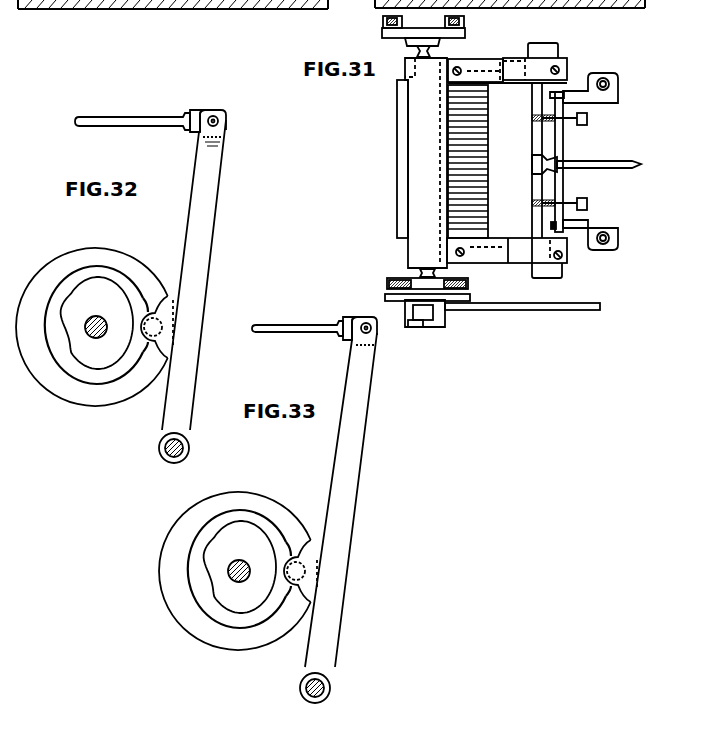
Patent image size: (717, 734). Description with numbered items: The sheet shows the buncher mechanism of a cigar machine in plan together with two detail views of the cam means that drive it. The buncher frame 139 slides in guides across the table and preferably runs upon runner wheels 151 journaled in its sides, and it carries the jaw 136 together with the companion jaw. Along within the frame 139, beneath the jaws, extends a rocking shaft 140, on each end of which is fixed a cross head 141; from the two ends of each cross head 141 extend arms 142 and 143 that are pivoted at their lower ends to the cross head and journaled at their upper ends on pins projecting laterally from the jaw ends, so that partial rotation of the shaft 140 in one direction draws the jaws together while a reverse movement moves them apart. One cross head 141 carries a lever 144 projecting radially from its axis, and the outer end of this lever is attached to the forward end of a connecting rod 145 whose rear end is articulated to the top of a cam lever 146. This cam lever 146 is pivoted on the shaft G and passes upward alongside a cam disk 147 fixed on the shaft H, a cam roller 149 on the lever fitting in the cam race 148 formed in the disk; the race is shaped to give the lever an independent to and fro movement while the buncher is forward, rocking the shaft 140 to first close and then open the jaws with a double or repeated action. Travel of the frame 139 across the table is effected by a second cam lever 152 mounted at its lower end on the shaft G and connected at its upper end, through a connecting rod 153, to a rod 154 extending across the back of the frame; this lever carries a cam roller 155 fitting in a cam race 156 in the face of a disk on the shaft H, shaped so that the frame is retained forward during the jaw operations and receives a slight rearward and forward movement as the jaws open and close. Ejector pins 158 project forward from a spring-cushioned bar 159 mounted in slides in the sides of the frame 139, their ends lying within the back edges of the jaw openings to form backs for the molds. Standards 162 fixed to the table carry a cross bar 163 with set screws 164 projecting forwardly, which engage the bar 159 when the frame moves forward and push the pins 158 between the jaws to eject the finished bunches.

In FIG. 31, the jaw 136 is at (397, 150).
In FIG. 31, the frame 139 is at (543, 63).
In FIG. 31, the rocking shaft 140 is at (417, 53).
In FIG. 31, the cross head 141 is at (441, 42).
In FIG. 31, the arm 142 is at (467, 32).
In FIG. 31, the arm 143 is at (385, 22).
In FIG. 31, the lever 144 is at (421, 313).
In FIG. 31, the connecting rod 145 is at (591, 311).
In FIG. 33, the connecting rod 145 is at (299, 325).
In FIG. 33, the cam lever 146 is at (353, 442).
In FIG. 33, the cam disk 147 is at (253, 497).
In FIG. 33, the cam race 148 is at (212, 623).
In FIG. 33, the cam roller 149 is at (300, 570).
In FIG. 31, the runner wheels 151 is at (480, 3).
In FIG. 32, the cam lever 152 is at (200, 263).
In FIG. 31, the connecting rod 153 is at (609, 167).
In FIG. 32, the connecting rod 153 is at (132, 117).
In FIG. 31, the rod 154 is at (537, 188).
In FIG. 32, the rod 154 is at (85, 255).
In FIG. 32, the cam roller 155 is at (152, 318).
In FIG. 32, the cam race 156 is at (80, 382).
In FIG. 31, the ejector pins 158 is at (460, 183).
In FIG. 31, the bar 159 is at (515, 160).
In FIG. 31, the standards 162 is at (618, 96).
In FIG. 31, the cross bar 163 is at (563, 143).
In FIG. 31, the set screws 164 is at (587, 118).
In FIG. 32, the shaft G is at (159, 450).
In FIG. 33, the shaft G is at (330, 688).
In FIG. 32, the shaft H is at (97, 333).
In FIG. 33, the shaft H is at (230, 577).